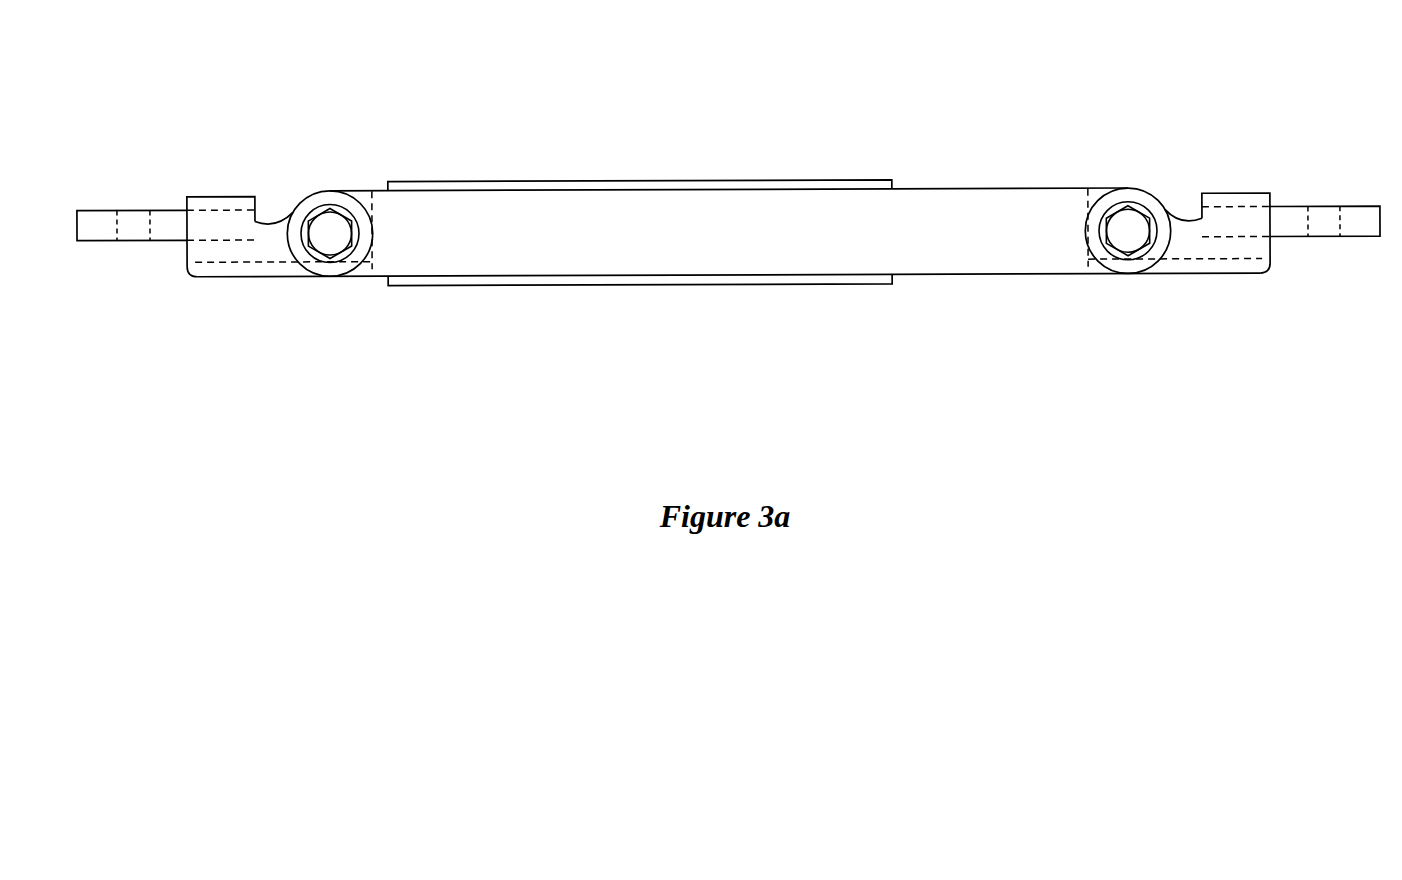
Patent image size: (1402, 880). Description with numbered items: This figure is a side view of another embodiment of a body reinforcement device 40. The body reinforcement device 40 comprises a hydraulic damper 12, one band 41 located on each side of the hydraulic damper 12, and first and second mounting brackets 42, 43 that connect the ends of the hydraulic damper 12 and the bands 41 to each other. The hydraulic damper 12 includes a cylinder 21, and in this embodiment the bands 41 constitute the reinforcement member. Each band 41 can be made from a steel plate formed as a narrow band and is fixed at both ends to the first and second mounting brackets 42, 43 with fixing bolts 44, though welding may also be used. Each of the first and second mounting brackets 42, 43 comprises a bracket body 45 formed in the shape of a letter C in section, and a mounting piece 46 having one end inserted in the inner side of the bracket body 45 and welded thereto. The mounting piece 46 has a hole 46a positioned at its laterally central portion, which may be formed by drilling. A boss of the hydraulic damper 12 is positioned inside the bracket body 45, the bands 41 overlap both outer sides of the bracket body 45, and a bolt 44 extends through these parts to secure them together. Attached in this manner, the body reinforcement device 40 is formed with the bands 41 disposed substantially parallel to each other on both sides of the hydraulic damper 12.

The body reinforcement device 40 is at (728, 213).
The band 41 is at (990, 212).
The first mounting bracket 42 is at (1220, 283).
The second mounting bracket 43 is at (215, 284).
The fixing bolt 44 is at (330, 226).
The bracket body 45 is at (272, 266).
The mounting piece 46 is at (103, 234).
The hole 46a is at (142, 217).
The hydraulic damper 12 is at (682, 292).
The cylinder 21 is at (782, 286).